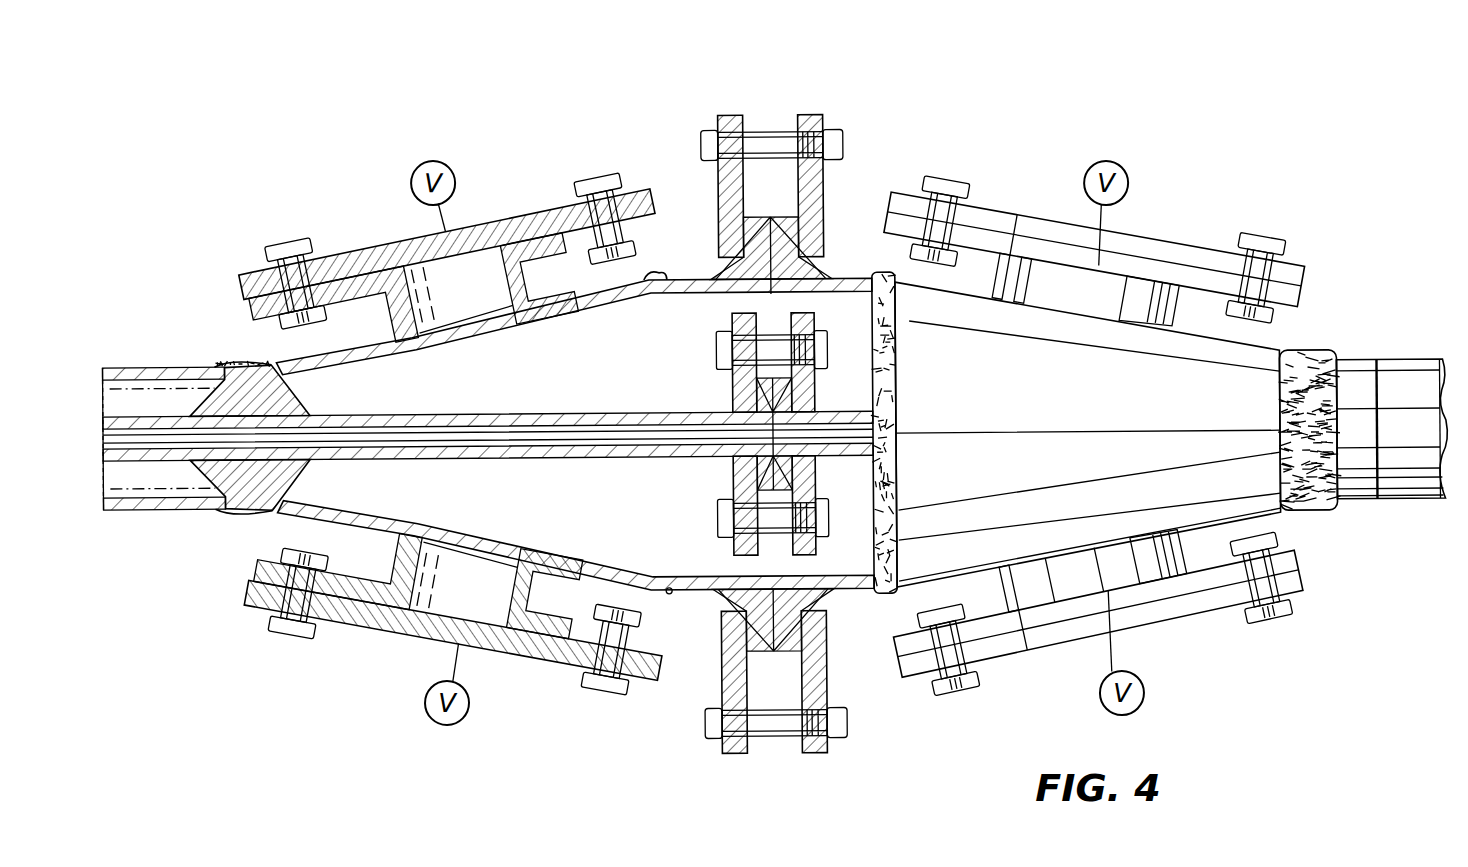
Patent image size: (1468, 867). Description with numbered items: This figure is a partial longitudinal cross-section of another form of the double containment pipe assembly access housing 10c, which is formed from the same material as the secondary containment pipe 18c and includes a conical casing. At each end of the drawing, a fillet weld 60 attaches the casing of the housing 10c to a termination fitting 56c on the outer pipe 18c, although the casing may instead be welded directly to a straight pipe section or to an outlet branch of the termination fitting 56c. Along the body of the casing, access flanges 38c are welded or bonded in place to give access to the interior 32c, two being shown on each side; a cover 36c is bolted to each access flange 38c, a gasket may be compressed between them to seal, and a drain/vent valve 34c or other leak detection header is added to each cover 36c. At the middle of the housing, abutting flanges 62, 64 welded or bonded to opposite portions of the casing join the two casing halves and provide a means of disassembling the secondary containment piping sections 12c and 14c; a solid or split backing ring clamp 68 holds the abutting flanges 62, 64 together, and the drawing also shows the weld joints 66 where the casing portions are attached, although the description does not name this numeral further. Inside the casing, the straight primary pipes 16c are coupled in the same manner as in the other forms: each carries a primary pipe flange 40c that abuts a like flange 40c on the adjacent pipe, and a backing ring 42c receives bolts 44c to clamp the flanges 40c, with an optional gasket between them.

The housing 10c is at (860, 165).
The secondary containment piping section 12c is at (128, 516).
The secondary containment piping section 14c is at (1428, 347).
The primary pipe 16c is at (458, 418).
The secondary containment pipe 18c is at (148, 358).
The interior 32c is at (588, 526).
The drain/vent valve 34c is at (455, 172).
The cover 36c is at (535, 213).
The access flange 38c is at (398, 297).
The primary pipe flange 40c is at (790, 408).
The backing ring 42c is at (735, 320).
The bolt 44c is at (737, 522).
The termination fitting 56c is at (292, 394).
The fillet weld 60 is at (232, 354).
The abutting flange 62 is at (795, 220).
The abutting flange 64 is at (755, 240).
The weld 66 is at (655, 282).
The backing ring clamp 68 is at (740, 114).